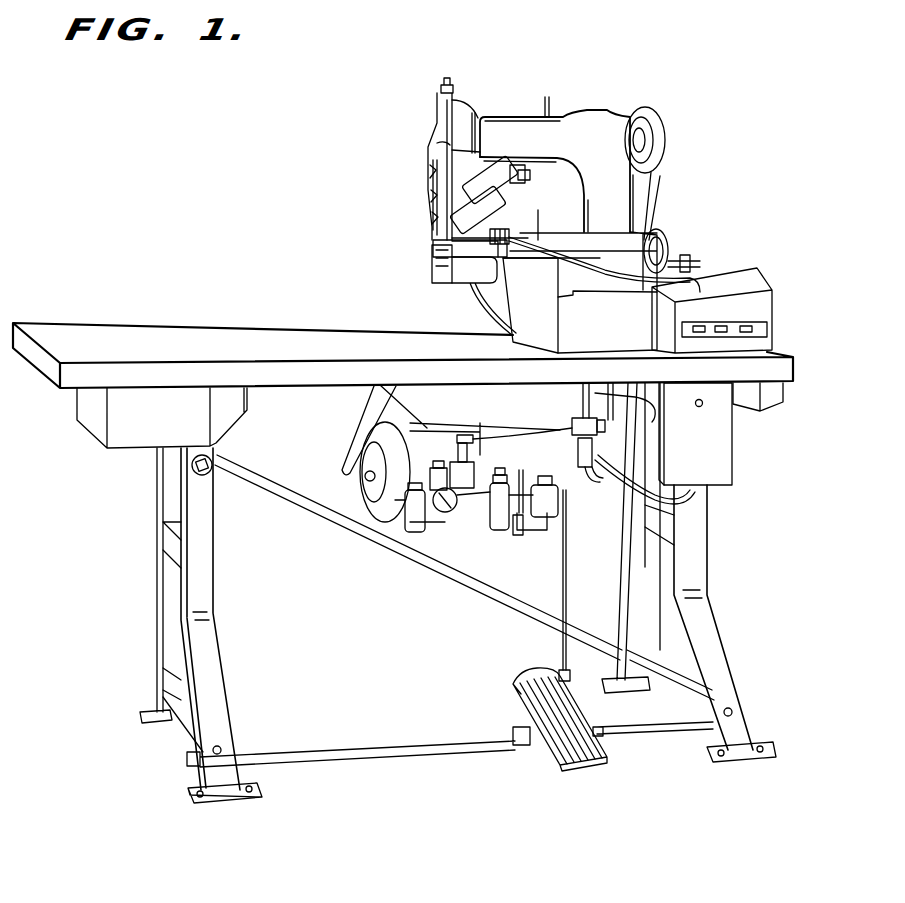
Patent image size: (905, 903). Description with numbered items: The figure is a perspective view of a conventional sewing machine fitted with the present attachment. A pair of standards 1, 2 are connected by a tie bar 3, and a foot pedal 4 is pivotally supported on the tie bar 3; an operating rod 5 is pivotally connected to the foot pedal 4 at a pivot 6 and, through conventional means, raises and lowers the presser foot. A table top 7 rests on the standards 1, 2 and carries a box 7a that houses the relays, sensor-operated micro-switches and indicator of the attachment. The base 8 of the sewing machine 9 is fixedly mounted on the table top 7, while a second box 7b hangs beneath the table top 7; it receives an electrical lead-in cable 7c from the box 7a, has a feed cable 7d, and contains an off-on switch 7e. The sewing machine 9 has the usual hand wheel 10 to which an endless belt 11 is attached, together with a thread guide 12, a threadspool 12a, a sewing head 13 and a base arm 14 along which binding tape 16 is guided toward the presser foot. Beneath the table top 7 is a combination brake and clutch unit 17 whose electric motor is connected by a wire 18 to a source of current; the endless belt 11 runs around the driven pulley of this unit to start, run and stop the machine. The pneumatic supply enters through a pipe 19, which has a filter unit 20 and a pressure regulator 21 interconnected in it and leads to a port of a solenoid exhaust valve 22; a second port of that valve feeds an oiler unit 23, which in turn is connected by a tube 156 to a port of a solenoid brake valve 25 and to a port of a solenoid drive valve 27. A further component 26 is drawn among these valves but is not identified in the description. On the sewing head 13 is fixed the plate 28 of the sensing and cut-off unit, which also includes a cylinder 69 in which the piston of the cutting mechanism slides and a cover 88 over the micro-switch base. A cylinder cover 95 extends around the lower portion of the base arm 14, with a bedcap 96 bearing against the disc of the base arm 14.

The standard 1 is at (170, 545).
The standard 2 is at (667, 537).
The tie bar 3 is at (381, 748).
The foot pedal 4 is at (537, 697).
The operating rod 5 is at (567, 584).
The pivot connection 6 is at (570, 681).
The table top 7 is at (133, 340).
The box 7a is at (733, 284).
The box 7b is at (727, 434).
The electrical lead-in cable 7c is at (700, 505).
The feed cable 7d is at (633, 398).
The off-on switch 7e is at (590, 482).
The base 8 is at (530, 326).
The sewing machine 9 is at (557, 130).
The hand wheel 10 is at (633, 110).
The endless belt 11 is at (653, 182).
The thread guide 12 is at (540, 105).
The threadspool 12a is at (653, 219).
The sewing head 13 is at (483, 117).
The base arm 14 is at (530, 305).
The binding tape 16 is at (610, 277).
The combination brake and clutch unit 17 is at (416, 440).
The wire 18 is at (377, 427).
The pipe 19 is at (370, 400).
The filter unit 20 is at (410, 523).
The pressure regulator 21 is at (443, 512).
The solenoid exhaust valve 22 is at (452, 460).
The oiler unit 23 is at (492, 520).
The solenoid brake valve 25 is at (547, 504).
The valve 26 is at (592, 451).
The solenoid drive valve 27 is at (596, 430).
The plate 28 is at (450, 122).
The cylinder 69 is at (440, 174).
The cover 88 is at (492, 212).
The cylinder cover 95 is at (468, 287).
The bedcap 96 is at (438, 273).
The tube 156 is at (527, 538).